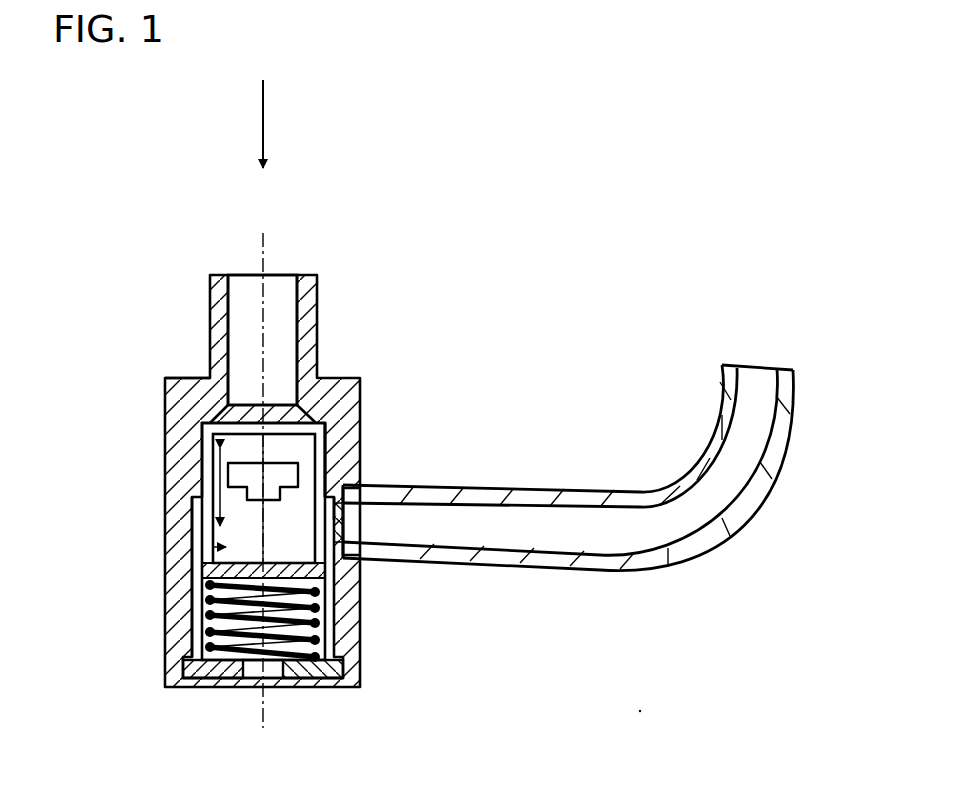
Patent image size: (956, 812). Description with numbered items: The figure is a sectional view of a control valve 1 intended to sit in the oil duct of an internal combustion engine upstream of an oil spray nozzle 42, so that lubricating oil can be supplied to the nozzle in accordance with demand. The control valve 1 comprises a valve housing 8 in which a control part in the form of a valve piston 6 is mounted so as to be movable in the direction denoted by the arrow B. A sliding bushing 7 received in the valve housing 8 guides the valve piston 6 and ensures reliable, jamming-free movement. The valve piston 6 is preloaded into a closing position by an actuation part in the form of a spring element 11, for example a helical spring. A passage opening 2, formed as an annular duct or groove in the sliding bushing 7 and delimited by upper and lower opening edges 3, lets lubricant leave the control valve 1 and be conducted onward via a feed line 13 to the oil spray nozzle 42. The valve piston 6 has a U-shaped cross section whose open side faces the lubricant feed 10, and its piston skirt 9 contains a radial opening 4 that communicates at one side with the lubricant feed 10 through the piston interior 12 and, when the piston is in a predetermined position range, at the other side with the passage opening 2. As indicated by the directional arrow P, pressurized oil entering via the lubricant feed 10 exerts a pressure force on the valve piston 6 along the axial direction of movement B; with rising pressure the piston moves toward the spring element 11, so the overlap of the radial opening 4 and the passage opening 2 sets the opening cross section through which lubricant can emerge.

The control valve 1 is at (185, 149).
The passage opening 2 is at (352, 522).
The opening edges 3 is at (315, 508).
The radial opening 4 is at (292, 443).
The valve piston 6 is at (333, 420).
The sliding bushing 7 is at (360, 657).
The valve housing 8 is at (343, 378).
The piston skirt 9 is at (333, 447).
The lubricant feed 10 is at (283, 270).
The spring element 11 is at (312, 680).
The piston interior 12 is at (167, 570).
The feed line 13 is at (543, 490).
The oil spray nozzle 42 is at (756, 360).
The directional arrow P is at (264, 131).
The direction of movement B is at (197, 502).